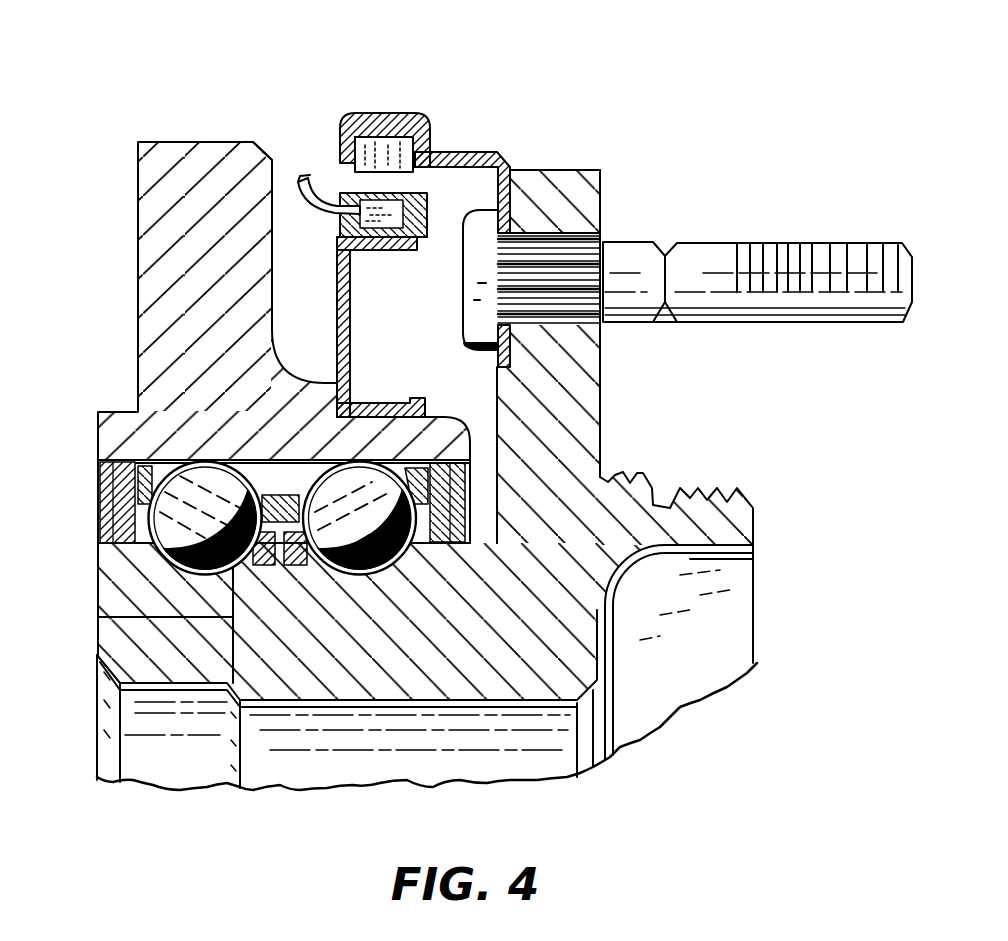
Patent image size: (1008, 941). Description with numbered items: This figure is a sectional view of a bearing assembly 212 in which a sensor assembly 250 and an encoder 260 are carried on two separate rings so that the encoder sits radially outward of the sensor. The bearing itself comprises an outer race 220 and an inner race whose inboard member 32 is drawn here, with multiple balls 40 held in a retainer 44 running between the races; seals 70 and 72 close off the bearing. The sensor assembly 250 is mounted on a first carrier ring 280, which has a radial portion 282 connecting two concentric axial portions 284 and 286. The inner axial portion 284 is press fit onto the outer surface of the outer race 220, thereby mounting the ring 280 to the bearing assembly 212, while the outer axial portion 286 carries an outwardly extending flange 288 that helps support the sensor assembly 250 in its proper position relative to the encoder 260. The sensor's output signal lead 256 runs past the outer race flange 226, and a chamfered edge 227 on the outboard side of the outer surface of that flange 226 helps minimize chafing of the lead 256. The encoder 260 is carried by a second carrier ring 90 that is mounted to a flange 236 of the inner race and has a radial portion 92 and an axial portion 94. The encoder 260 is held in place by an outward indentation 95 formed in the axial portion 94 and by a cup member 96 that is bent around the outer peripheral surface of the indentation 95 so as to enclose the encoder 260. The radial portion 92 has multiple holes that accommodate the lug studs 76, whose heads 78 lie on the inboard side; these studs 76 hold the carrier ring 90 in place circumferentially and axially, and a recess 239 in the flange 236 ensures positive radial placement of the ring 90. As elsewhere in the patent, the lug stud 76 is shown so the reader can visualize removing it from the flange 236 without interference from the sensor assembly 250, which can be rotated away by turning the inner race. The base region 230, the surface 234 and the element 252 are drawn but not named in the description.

The bearing assembly 212 is at (284, 60).
The outer race 220 is at (399, 461).
The flange 226 is at (140, 246).
The chamfered edge 227 is at (272, 153).
The output signal lead 256 is at (300, 194).
The sensor assembly 250 is at (351, 230).
The locking block 252 is at (405, 194).
The first carrier ring 280 is at (351, 294).
The radial portion 282 is at (348, 348).
The inner axial portion 284 is at (412, 405).
The outer axial portion 286 is at (379, 253).
The outwardly extending flange 288 is at (410, 227).
The encoder 260 is at (430, 145).
The outward indentation 95 is at (380, 113).
The cup member 96 is at (413, 113).
The second carrier ring 90 is at (626, 211).
The axial portion 94 is at (497, 153).
The radial portion 92 is at (509, 208).
The head 78 is at (504, 338).
The lug stud 76 is at (793, 324).
The flange 236 is at (594, 397).
The recess 239 is at (511, 357).
The seal 70 is at (100, 506).
The seal 72 is at (463, 487).
The balls 40 is at (248, 492).
The retainer 44 is at (160, 483).
The inboard member 32 is at (103, 586).
The housing shoulder 234 is at (99, 645).
The base plate 230 is at (493, 712).